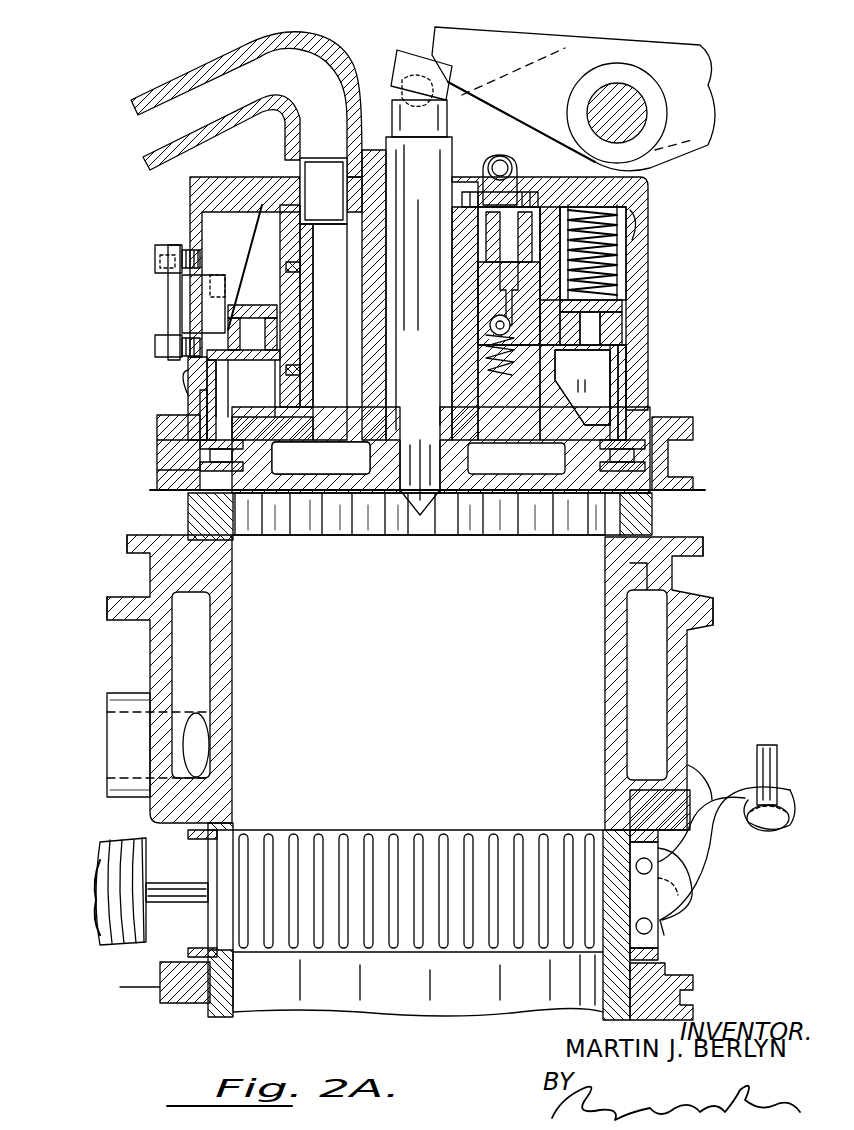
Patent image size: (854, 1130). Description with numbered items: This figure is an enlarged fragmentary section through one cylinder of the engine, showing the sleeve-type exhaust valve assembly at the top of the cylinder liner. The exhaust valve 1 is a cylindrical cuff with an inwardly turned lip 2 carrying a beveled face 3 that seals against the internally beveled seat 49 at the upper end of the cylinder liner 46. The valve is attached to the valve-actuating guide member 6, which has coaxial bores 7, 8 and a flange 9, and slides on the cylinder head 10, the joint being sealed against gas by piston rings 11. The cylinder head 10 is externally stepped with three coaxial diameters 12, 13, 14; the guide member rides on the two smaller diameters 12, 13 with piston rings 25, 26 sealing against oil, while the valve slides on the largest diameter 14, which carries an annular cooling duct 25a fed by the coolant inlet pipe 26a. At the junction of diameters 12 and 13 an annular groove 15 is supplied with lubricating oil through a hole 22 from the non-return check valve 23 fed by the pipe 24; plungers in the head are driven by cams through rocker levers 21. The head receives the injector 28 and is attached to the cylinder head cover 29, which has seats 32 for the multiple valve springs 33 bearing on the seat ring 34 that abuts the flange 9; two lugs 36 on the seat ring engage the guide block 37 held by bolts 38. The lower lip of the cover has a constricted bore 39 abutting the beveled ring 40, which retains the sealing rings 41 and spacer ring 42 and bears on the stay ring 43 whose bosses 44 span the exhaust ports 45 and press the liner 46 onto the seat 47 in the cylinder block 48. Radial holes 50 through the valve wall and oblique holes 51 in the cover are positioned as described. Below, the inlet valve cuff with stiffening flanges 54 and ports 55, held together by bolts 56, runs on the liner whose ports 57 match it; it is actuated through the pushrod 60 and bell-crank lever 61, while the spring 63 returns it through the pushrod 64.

The exhaust valve 1 is at (244, 398).
The inwardly turned lip 2 is at (265, 515).
The beveled face 3 is at (200, 492).
The valve-actuating guide member 6 is at (285, 268).
The bore 7 is at (286, 248).
The bore 8 is at (290, 312).
The flange 9 is at (268, 378).
The cylinder head 10 is at (360, 240).
The piston rings 11 is at (582, 387).
The diameter 12 is at (306, 266).
The diameter 13 is at (298, 376).
The diameter 14 is at (200, 446).
The annular groove 15 is at (292, 332).
The rocker lever 21 is at (553, 93).
The hole 22 is at (600, 333).
The non-return check valve 23 is at (465, 332).
The pipe 24 is at (498, 160).
The piston ring 25 is at (312, 278).
The annular cooling duct 25a is at (335, 474).
The piston ring 26 is at (300, 364).
The coolant inlet pipe 26a is at (160, 105).
The injector 28 is at (370, 140).
The cylinder head cover 29 is at (190, 190).
The seats 32 is at (640, 222).
The valve springs 33 is at (628, 246).
The seat ring 34 is at (625, 318).
The lugs 36 is at (242, 268).
The guide block 37 is at (205, 285).
The bolts 38 is at (160, 270).
The constricted bore 39 is at (192, 402).
The beveled ring 40 is at (630, 420).
The sealing rings 41 is at (650, 444).
The spacer ring 42 is at (200, 462).
The stay ring 43 is at (200, 514).
The bosses 44 is at (378, 520).
The exhaust ports 45 is at (525, 520).
The cylinder liner 46 is at (232, 690).
The seat 47 is at (160, 566).
The cylinder block 48 is at (168, 420).
The internally beveled seat 49 is at (245, 540).
The holes 50 is at (640, 400).
The oblique holes 51 is at (188, 405).
The stiffening flanges 54 is at (660, 958).
The ports 55 is at (210, 868).
The bolts 56 is at (680, 915).
The ports 57 is at (425, 832).
The pushrod 60 is at (762, 746).
The bell-crank lever 61 is at (712, 800).
The spring 63 is at (112, 948).
The pushrod 64 is at (178, 902).